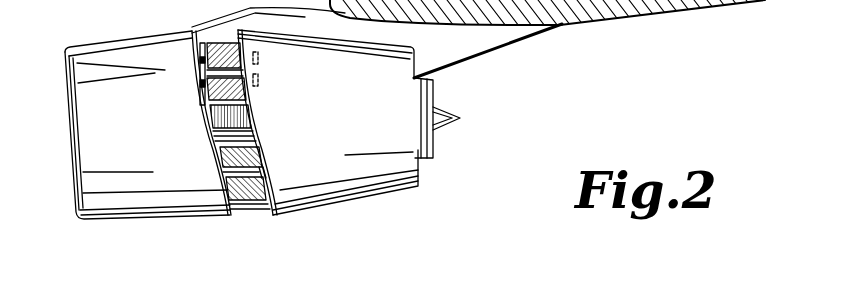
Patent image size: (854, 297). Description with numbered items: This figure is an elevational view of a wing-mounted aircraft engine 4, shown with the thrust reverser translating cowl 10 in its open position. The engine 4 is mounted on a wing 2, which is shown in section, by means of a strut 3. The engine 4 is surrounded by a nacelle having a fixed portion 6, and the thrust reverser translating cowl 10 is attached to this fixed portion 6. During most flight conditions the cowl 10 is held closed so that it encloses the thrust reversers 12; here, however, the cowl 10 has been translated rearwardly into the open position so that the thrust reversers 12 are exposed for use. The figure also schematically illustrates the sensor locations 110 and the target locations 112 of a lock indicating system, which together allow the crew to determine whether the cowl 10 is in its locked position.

The wing 2 is at (706, 6).
The strut 3 is at (483, 42).
The aircraft engine 4 is at (261, 148).
The fixed portion 6 is at (92, 213).
The thrust reverser translating cowl 10 is at (310, 196).
The thrust reversers 12 is at (214, 44).
The sensor locations 110 is at (200, 62).
The target locations 112 is at (259, 58).